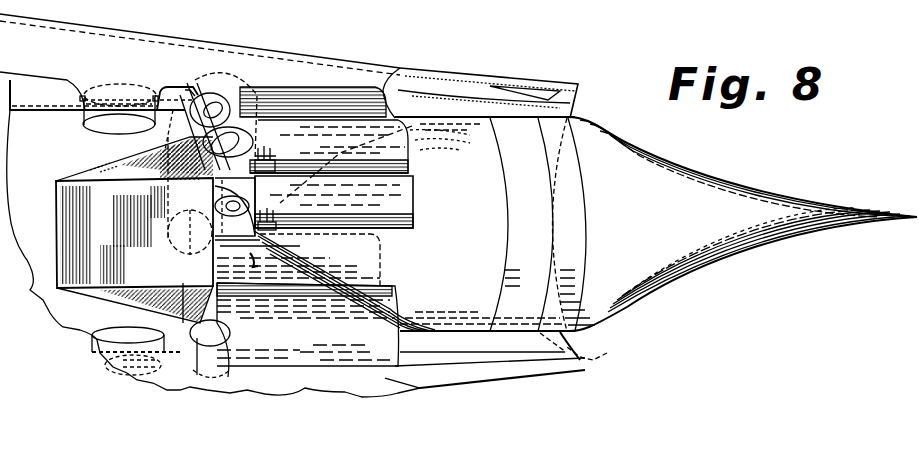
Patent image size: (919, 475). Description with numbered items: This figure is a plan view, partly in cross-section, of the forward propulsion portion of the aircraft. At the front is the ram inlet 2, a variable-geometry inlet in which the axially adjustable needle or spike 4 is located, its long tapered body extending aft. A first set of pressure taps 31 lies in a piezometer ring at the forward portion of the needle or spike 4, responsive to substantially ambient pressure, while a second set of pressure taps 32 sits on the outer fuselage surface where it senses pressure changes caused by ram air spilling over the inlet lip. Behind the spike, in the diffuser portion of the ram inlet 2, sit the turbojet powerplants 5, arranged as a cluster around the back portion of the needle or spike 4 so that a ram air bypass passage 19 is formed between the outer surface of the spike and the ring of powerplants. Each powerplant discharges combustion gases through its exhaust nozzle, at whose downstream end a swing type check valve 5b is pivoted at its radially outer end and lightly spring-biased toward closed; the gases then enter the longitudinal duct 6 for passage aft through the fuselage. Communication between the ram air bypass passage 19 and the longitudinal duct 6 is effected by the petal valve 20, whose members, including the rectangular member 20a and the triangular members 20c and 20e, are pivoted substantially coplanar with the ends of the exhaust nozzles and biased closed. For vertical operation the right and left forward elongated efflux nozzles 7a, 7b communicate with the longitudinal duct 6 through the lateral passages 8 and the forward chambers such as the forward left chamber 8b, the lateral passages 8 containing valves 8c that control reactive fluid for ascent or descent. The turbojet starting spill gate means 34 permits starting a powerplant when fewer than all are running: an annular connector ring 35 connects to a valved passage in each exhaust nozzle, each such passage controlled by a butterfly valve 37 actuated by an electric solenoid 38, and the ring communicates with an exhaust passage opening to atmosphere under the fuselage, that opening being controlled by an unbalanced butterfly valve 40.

The ram inlet 2 is at (473, 50).
The needle or spike 4 is at (746, 194).
The turbojet powerplant 5 is at (405, 162).
The swing type check valve 5b is at (217, 137).
The longitudinal duct 6 is at (32, 162).
The right forward elongated efflux nozzle 7a is at (397, 385).
The left forward elongated efflux nozzle 7b is at (54, 20).
The lateral passage 8 is at (82, 100).
The forward left chamber 8b is at (175, 65).
The valve 8c is at (122, 82).
The ram air bypass passage 19 is at (383, 88).
The petal valve 20 is at (122, 216).
The rectangular member 20a is at (68, 196).
The triangular member 20c is at (108, 168).
The triangular member 20e is at (137, 305).
The first set of pressure taps 31 is at (882, 222).
The second set of pressure taps 32 is at (585, 347).
The turbojet starting spill gate means 34 is at (165, 157).
The annular connector ring 35 is at (196, 87).
The butterfly valve 37 is at (193, 137).
The electric solenoid 38 is at (245, 175).
The unbalanced butterfly valve 40 is at (187, 250).